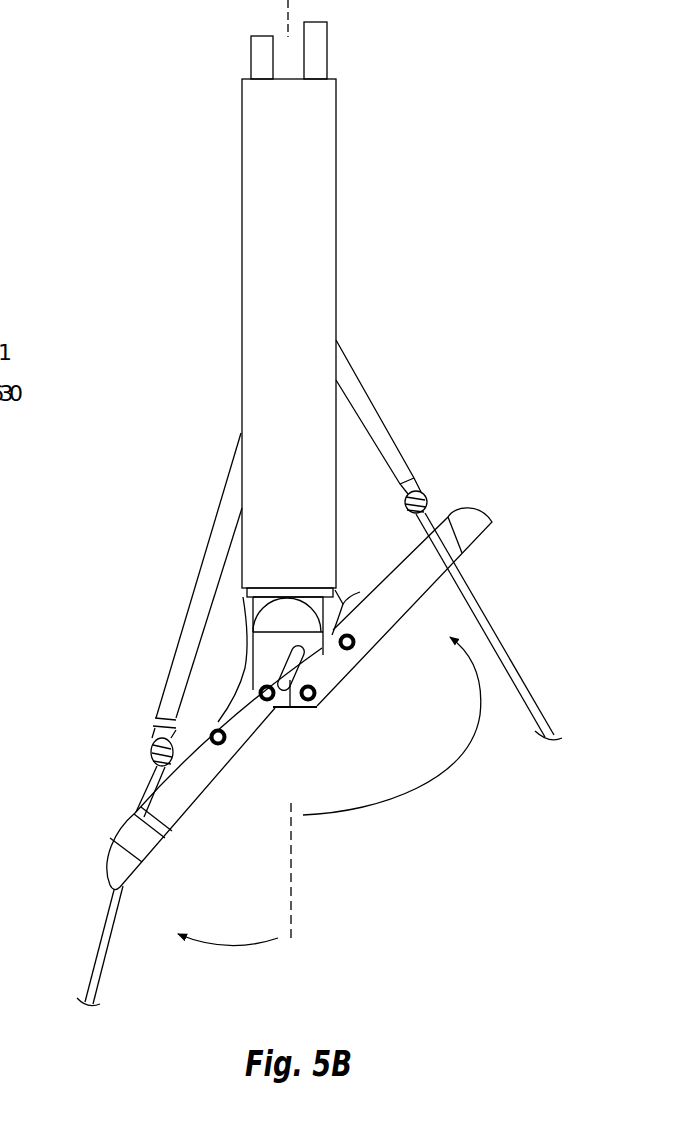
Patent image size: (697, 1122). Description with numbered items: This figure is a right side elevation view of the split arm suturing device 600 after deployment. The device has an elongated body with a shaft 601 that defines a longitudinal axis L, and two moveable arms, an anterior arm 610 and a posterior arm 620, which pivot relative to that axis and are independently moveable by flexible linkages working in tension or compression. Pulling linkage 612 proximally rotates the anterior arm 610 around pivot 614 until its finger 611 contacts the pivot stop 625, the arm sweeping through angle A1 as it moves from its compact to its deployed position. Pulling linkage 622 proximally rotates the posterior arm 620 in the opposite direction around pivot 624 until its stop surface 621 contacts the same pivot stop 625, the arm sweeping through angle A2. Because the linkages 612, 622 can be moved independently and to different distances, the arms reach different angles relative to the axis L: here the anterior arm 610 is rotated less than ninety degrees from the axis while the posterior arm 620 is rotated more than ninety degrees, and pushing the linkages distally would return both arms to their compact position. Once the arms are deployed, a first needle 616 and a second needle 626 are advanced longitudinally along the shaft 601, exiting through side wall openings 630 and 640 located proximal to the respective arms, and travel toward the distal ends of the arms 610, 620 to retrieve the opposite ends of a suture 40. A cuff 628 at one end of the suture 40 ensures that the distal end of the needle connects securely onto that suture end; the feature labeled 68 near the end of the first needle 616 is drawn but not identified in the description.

The split arm suturing device 600 is at (208, 318).
The shaft 601 is at (318, 304).
The side wall opening 640 is at (352, 340).
The second needle 626 is at (383, 432).
The cuff 628 is at (427, 497).
The side wall opening 630 is at (222, 426).
The first needle 616 is at (200, 605).
The joint 68 is at (150, 745).
The finger 611 is at (295, 649).
The linkage 612 is at (235, 662).
The linkage 622 is at (343, 604).
The posterior arm 620 is at (387, 611).
The stop surface 621 is at (322, 658).
The pivot 624 is at (317, 707).
The pivot stop 625 is at (296, 710).
The pivot 614 is at (278, 708).
The anterior arm 610 is at (190, 795).
The suture 40 is at (525, 672).
The longitudinal axis L is at (295, 855).
The angle A1 is at (226, 946).
The angle A2 is at (440, 790).